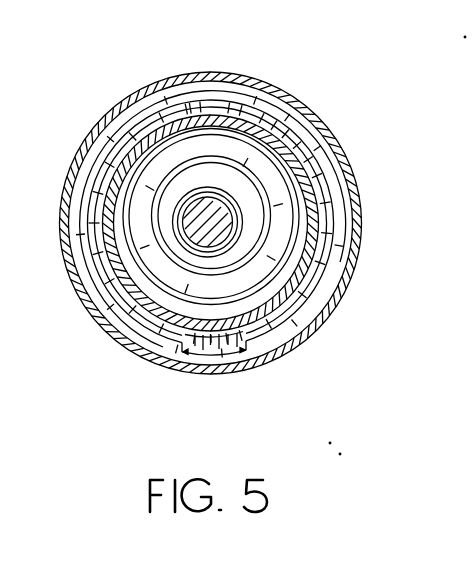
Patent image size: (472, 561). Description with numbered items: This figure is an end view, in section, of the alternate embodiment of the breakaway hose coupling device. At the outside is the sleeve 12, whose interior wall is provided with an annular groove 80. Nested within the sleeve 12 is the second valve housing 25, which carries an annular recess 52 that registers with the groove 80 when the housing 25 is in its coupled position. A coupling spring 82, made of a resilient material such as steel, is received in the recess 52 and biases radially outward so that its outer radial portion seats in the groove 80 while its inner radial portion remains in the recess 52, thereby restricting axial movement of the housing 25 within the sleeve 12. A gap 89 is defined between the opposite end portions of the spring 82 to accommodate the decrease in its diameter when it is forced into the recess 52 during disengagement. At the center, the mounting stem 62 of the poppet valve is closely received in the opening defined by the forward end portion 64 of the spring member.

The sleeve 12 is at (210, 72).
The annular groove 80 is at (320, 128).
The coupling spring 82 is at (263, 100).
The annular recess 52 is at (120, 181).
The forward end portion of the spring member 64 is at (270, 183).
The second valve housing 25 is at (133, 286).
The mounting stem 62 is at (196, 238).
The gap 89 is at (223, 357).